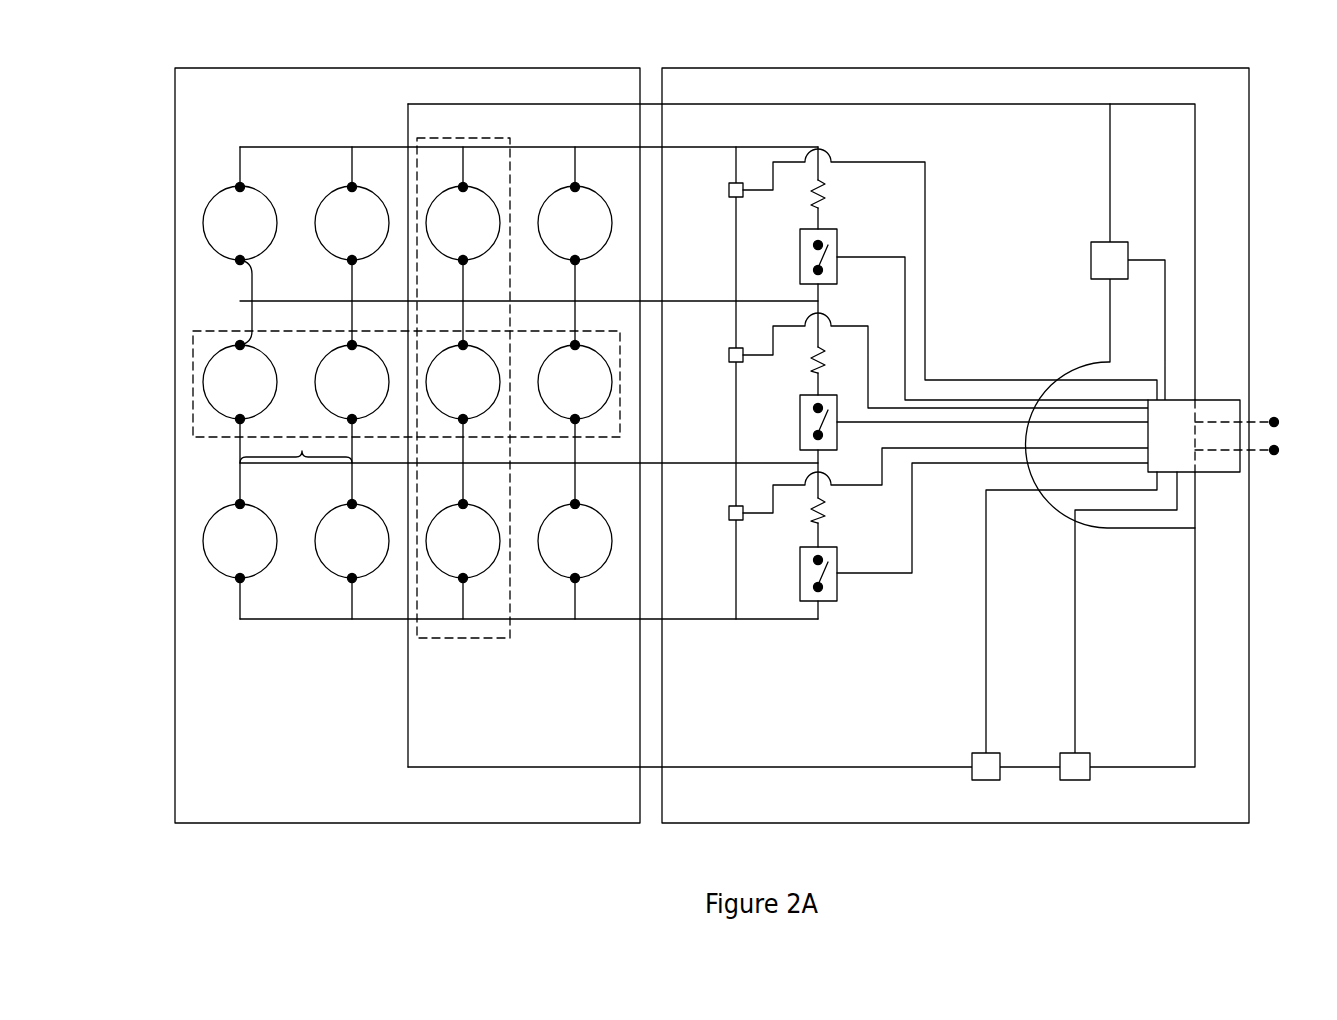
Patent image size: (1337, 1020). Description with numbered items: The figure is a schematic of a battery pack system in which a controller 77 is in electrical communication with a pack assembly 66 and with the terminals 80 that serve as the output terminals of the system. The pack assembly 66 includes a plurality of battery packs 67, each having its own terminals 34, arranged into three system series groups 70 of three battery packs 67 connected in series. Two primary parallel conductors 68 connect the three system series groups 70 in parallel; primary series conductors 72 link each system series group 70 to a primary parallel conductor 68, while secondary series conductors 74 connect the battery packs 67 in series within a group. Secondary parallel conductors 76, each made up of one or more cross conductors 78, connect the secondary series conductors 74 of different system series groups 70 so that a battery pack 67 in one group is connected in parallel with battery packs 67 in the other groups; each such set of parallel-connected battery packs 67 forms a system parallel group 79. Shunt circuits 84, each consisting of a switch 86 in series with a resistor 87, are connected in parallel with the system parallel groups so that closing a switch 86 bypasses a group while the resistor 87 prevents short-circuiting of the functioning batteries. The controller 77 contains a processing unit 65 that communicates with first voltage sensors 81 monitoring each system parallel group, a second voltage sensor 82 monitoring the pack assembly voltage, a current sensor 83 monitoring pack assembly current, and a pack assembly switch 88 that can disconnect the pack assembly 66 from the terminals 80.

The terminals 34 is at (350, 186).
The processing unit 65 is at (1217, 400).
The pack assembly 66 is at (352, 68).
The battery packs 67 is at (493, 200).
The primary parallel conductors 68 is at (296, 145).
The system series groups 70 is at (465, 137).
The primary series conductors 72 is at (238, 165).
The secondary series conductors 74 is at (253, 319).
The secondary parallel conductors 76 is at (380, 302).
The control circuit module 77 is at (1197, 265).
The cross conductors 78 is at (302, 453).
The system parallel group 79 is at (192, 355).
The terminals 80 is at (1272, 418).
The first voltage sensors 81 is at (728, 190).
The second voltage sensor 82 is at (1091, 260).
The current sensor 83 is at (1066, 780).
The shunt circuits 84 is at (853, 118).
The switches 86 is at (800, 257).
The resistors 87 is at (825, 197).
The pack assembly switch 88 is at (972, 780).